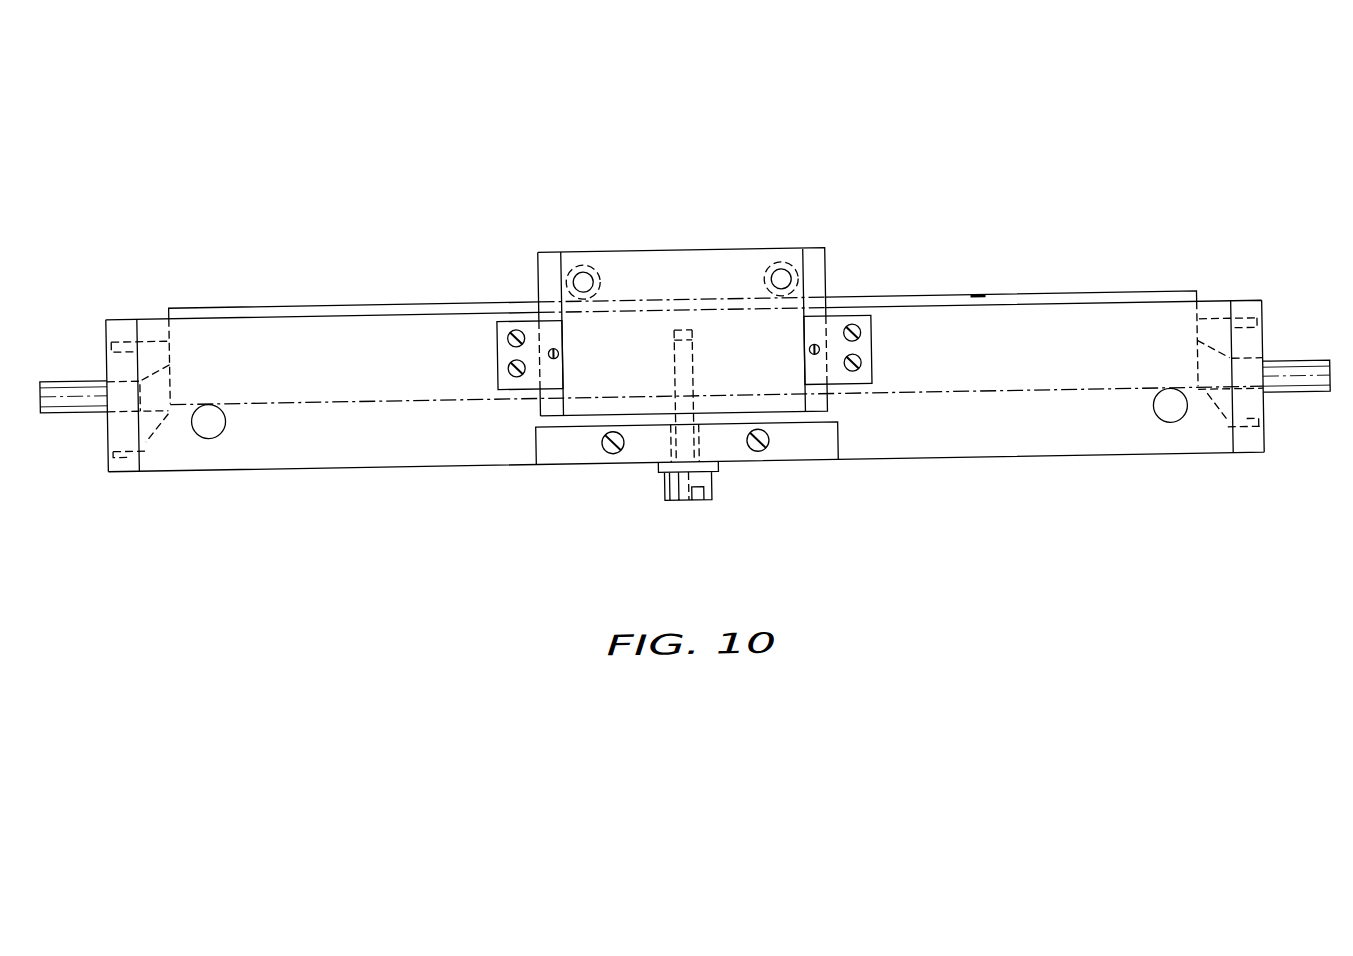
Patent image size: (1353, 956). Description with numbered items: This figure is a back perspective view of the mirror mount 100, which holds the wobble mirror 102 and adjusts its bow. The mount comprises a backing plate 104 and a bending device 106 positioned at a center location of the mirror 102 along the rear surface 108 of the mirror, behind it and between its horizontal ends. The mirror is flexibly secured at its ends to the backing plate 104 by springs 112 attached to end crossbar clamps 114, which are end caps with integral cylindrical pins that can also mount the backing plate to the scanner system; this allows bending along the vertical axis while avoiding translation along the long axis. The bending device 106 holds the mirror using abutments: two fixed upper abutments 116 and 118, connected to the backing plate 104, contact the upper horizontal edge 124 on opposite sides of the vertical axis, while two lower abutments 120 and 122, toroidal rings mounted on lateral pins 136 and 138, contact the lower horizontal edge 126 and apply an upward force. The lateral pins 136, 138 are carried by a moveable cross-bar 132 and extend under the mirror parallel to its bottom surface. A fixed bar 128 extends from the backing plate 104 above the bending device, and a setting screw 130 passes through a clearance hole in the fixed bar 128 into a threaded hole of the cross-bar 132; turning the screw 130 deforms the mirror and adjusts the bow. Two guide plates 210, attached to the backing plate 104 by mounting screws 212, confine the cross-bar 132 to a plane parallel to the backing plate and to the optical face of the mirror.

The mirror mount 100 is at (977, 143).
The wobble mirror 102 is at (1202, 301).
The backing plate 104 is at (933, 457).
The bending device 106 is at (529, 192).
The rear surface 108 is at (983, 298).
The springs 112 is at (165, 434).
The end crossbar clamps 114 is at (125, 451).
The upper abutment 116 is at (209, 428).
The upper abutment 118 is at (1168, 430).
The lower abutment 120 is at (600, 275).
The lower abutment 122 is at (768, 271).
The upper horizontal edge 124 is at (299, 404).
The lower horizontal edge 126 is at (325, 288).
The fixed bar 128 is at (797, 454).
The setting screw 130 is at (680, 495).
The cross-bar 132 is at (543, 266).
The lateral pin 136 is at (585, 270).
The lateral pin 138 is at (785, 264).
The guide plates 210 is at (836, 320).
The mounting screws 212 is at (510, 363).